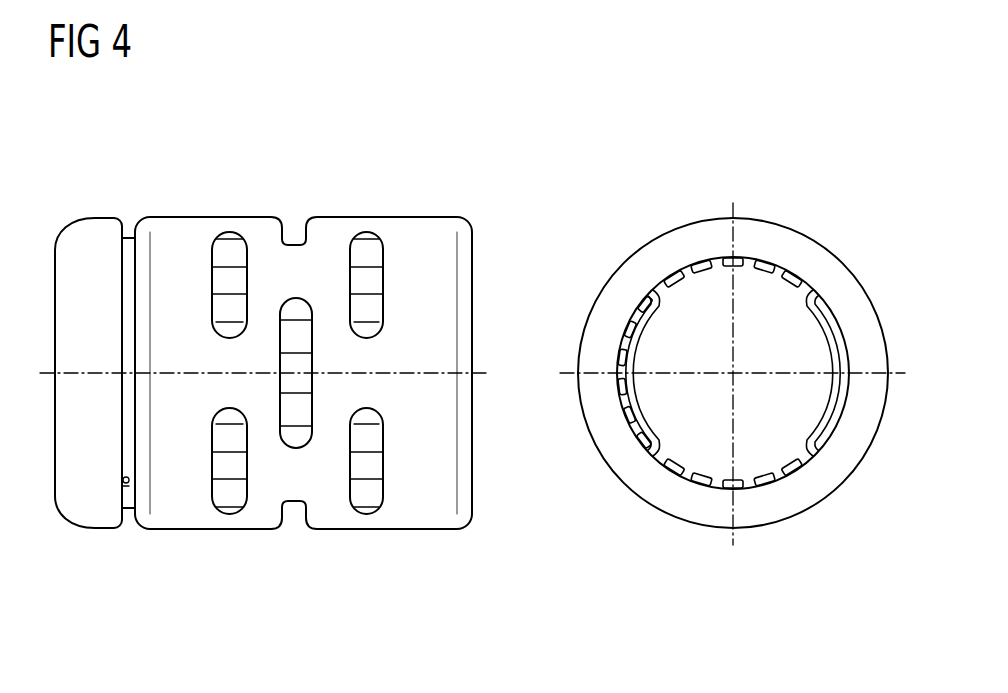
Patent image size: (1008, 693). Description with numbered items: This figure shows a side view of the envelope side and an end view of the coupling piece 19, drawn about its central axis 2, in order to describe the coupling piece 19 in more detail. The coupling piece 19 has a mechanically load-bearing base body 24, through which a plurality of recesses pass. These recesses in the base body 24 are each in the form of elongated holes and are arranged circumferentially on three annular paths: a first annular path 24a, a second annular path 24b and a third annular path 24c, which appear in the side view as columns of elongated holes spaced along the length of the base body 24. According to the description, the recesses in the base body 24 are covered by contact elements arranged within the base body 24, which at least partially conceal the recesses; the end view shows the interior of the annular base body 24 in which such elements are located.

The axis 2 is at (476, 373).
The coupling piece 19 is at (471, 319).
The base body 24 is at (414, 217).
The first annular path 24a is at (226, 550).
The second annular path 24b is at (296, 550).
The third annular path 24c is at (365, 550).